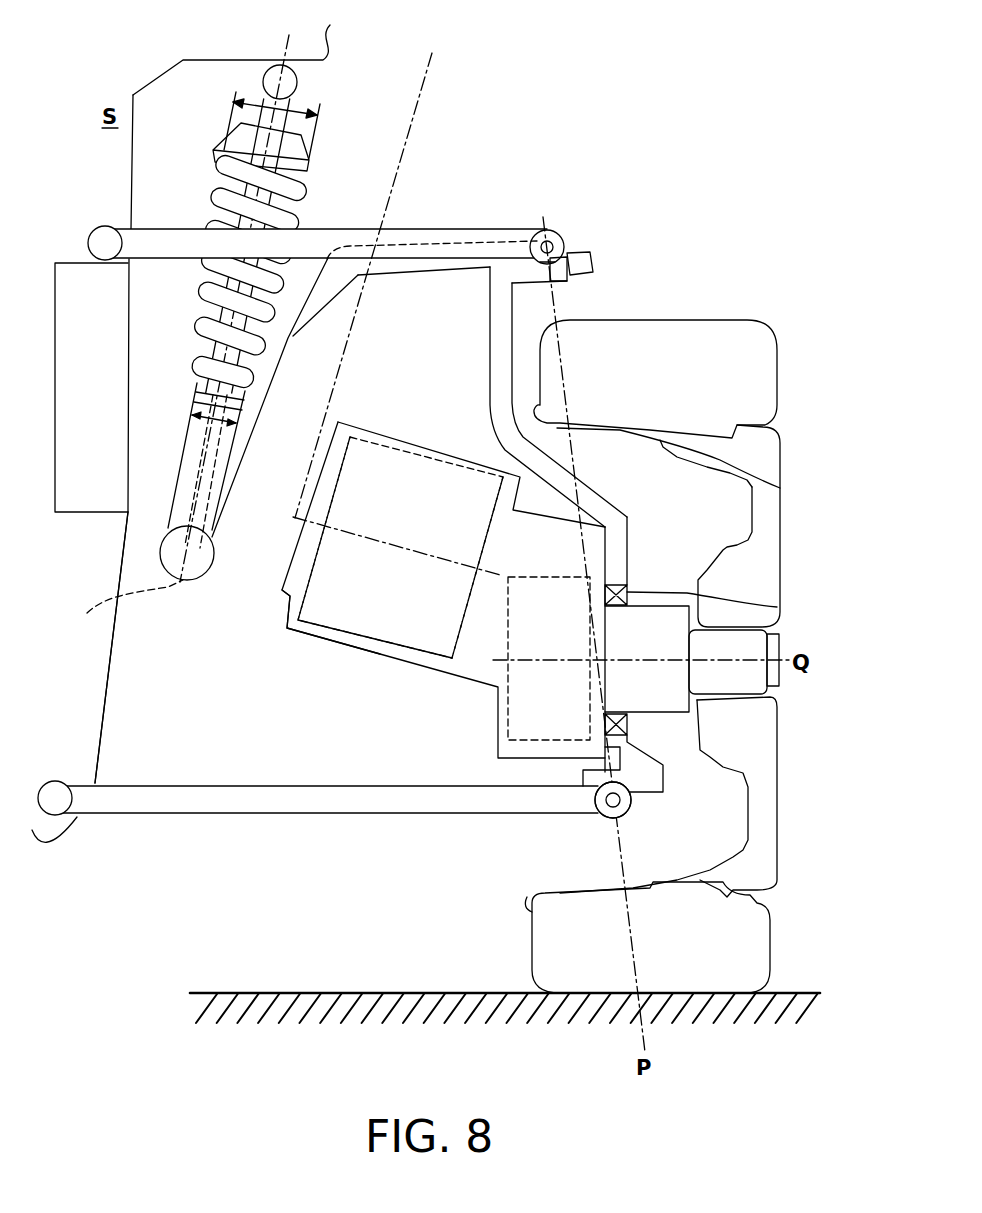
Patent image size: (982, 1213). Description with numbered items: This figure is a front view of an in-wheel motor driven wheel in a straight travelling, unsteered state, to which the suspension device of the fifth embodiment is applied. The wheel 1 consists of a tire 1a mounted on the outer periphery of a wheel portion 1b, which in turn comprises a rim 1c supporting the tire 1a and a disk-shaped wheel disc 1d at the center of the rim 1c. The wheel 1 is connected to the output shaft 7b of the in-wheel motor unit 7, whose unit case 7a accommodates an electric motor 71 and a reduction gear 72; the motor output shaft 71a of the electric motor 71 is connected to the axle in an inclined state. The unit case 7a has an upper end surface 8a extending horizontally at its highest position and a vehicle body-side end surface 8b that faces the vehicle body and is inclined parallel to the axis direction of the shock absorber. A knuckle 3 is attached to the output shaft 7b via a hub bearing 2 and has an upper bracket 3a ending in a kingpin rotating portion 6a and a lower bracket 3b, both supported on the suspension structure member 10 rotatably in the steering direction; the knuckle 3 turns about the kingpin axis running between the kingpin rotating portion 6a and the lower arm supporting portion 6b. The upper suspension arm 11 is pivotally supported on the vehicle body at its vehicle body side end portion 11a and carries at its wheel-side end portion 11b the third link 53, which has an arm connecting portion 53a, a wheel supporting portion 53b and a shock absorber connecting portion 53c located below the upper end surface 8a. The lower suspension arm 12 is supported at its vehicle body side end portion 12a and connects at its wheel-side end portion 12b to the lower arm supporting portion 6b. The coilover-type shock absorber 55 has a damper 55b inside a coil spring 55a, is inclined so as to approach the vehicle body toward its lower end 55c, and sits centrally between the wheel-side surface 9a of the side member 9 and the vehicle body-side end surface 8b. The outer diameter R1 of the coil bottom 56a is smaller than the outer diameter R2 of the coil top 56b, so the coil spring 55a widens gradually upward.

The wheel 1 is at (696, 630).
The tire 1a is at (720, 338).
The wheel portion 1b is at (714, 661).
The rim 1c is at (780, 488).
The wheel disc 1d is at (826, 495).
The hub bearing 2 is at (777, 607).
The knuckle 3 is at (564, 555).
The upper bracket 3a is at (490, 372).
The lower bracket 3b is at (645, 775).
The kingpin rotating portion 6a is at (592, 262).
The lower arm supporting portion 6b is at (600, 811).
The in-wheel motor unit 7 is at (400, 547).
The unit case 7a is at (421, 631).
The output shaft 7b is at (665, 702).
The upper end surface 8a is at (452, 455).
The vehicle body-side end surface 8b is at (283, 606).
The side member 9 is at (84, 272).
The wheel-side surface 9a is at (127, 532).
The suspension structure member 10 is at (507, 188).
The upper suspension arm 11 is at (361, 212).
The vehicle body side end portion 11a is at (103, 238).
The wheel-side end portion 11b is at (565, 247).
The lower suspension arm 12 is at (361, 797).
The vehicle body side end portion 12a is at (53, 792).
The wheel-side end portion 12b is at (622, 815).
The third link 53 is at (365, 401).
The arm connecting portion 53a is at (558, 231).
The wheel supporting portion 53b is at (567, 281).
The shock absorber connecting portion 53c is at (121, 610).
The shock absorber 55 is at (225, 302).
The coil spring 55a is at (222, 205).
The damper 55b is at (182, 463).
The lower end 55c is at (165, 555).
The coil bottom 56a is at (198, 372).
The coil top 56b is at (308, 183).
The electric motor 71 is at (367, 642).
The motor output shaft 71a is at (492, 573).
The reduction gear 72 is at (505, 719).
The outer diameter of the coil bottom R1 is at (212, 419).
The outer diameter of the coil top R2 is at (318, 110).